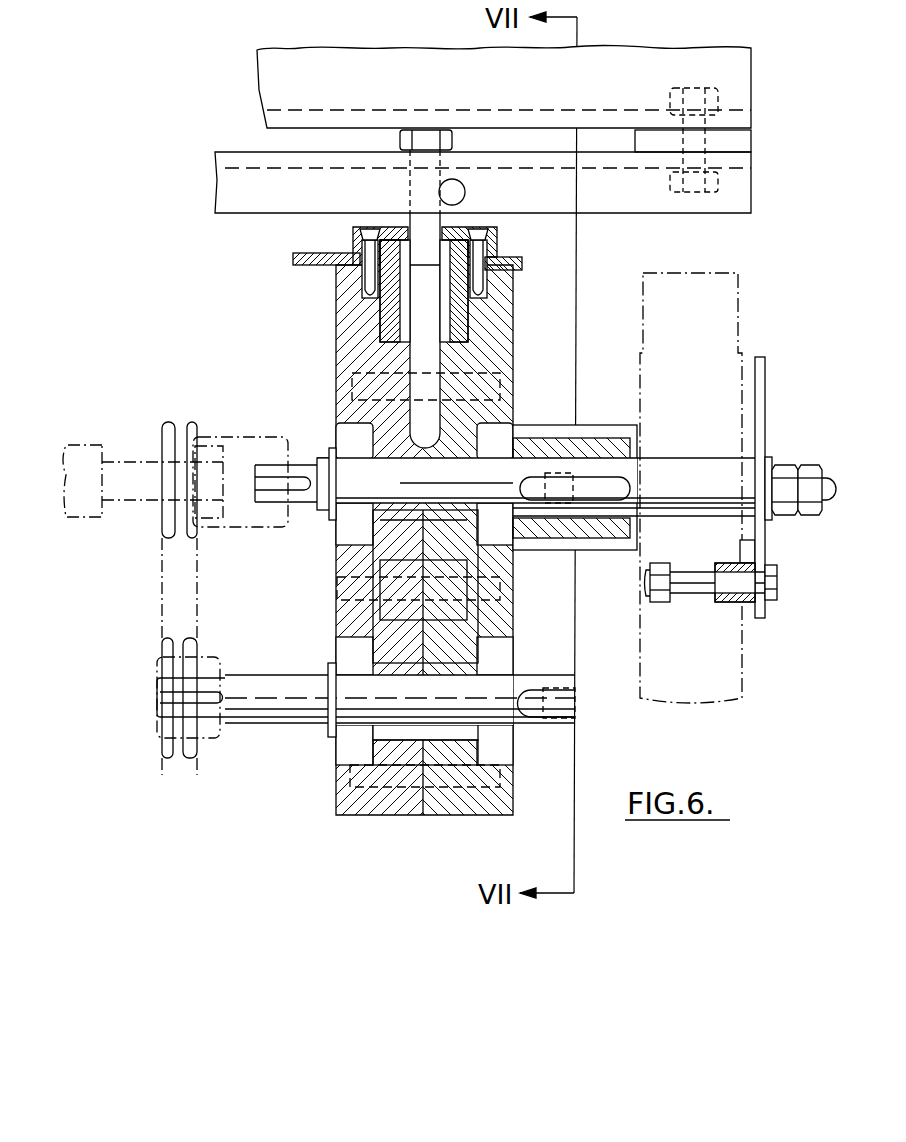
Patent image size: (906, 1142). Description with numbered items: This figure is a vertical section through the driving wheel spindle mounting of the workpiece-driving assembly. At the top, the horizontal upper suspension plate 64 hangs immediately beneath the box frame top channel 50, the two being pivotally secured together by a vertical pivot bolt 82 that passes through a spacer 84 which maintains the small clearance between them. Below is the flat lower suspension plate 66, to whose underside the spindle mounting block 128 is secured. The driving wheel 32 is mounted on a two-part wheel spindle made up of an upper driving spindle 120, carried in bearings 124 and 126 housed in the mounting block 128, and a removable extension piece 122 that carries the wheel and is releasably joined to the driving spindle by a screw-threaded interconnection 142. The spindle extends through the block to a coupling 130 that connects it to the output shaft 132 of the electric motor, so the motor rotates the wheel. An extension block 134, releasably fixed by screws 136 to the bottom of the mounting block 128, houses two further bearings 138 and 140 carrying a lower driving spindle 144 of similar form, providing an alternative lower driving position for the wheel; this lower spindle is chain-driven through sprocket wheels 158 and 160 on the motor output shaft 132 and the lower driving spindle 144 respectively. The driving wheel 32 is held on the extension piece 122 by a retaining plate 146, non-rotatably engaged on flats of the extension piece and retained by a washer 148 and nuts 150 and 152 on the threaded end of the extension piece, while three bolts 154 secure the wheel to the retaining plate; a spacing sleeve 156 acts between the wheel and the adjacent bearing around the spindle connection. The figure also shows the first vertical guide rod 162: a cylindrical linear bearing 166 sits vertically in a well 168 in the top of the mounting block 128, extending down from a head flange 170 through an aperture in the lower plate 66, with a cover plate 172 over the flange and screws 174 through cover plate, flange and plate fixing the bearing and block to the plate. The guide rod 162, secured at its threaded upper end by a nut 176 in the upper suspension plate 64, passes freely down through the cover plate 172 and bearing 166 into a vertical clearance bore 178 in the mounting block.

The driving wheel 32 is at (718, 289).
The top channel 50 is at (276, 84).
The upper suspension plate 64 is at (230, 190).
The lower suspension plate 66 is at (302, 257).
The pivot bolt 82 is at (736, 180).
The spacer 84 is at (740, 150).
The upper driving spindle 120 is at (524, 460).
The extension piece 122 is at (604, 441).
The bearing 124 is at (335, 452).
The bearing 126 is at (500, 550).
The spindle mounting block 128 is at (347, 289).
The coupling 130 is at (243, 455).
The output shaft 132 is at (83, 462).
The extension block 134 is at (460, 805).
The screws 136 is at (500, 606).
The bearing 138 is at (344, 749).
The bearing 140 is at (500, 661).
The screw-threaded interconnection 142 is at (568, 464).
The lower driving spindle 144 is at (287, 688).
The retaining plate 146 is at (760, 372).
The washer 148 is at (773, 464).
The nut 150 is at (787, 508).
The nut 152 is at (814, 502).
The bolts 154 is at (735, 606).
The spacing sleeve 156 is at (591, 538).
The sprocket wheel 158 is at (168, 447).
The sprocket wheel 160 is at (174, 756).
The first vertical guide rod 162 is at (433, 308).
The cylindrical linear bearing 166 is at (456, 343).
The well 168 is at (375, 315).
The head flange 170 is at (500, 258).
The cover plate 172 is at (491, 238).
The screws 174 is at (372, 231).
The nut 176 is at (426, 135).
The vertical clearance bore 178 is at (488, 381).